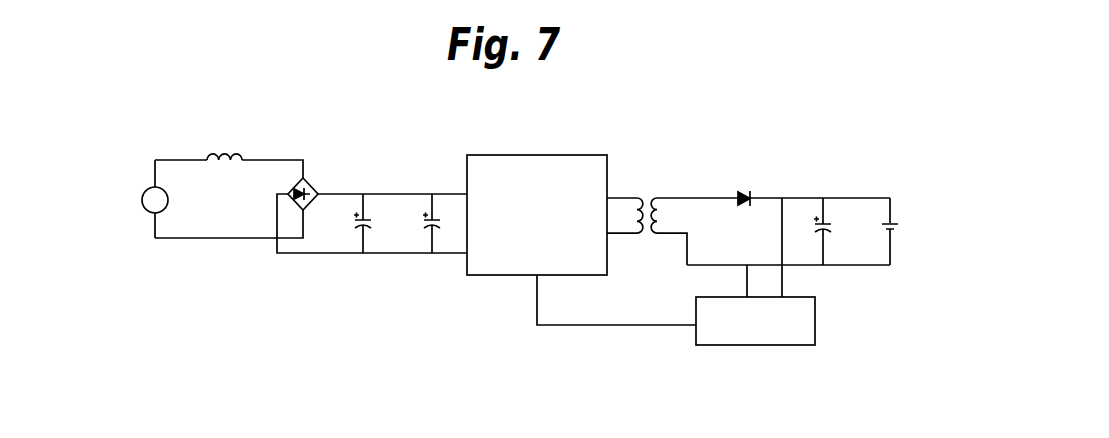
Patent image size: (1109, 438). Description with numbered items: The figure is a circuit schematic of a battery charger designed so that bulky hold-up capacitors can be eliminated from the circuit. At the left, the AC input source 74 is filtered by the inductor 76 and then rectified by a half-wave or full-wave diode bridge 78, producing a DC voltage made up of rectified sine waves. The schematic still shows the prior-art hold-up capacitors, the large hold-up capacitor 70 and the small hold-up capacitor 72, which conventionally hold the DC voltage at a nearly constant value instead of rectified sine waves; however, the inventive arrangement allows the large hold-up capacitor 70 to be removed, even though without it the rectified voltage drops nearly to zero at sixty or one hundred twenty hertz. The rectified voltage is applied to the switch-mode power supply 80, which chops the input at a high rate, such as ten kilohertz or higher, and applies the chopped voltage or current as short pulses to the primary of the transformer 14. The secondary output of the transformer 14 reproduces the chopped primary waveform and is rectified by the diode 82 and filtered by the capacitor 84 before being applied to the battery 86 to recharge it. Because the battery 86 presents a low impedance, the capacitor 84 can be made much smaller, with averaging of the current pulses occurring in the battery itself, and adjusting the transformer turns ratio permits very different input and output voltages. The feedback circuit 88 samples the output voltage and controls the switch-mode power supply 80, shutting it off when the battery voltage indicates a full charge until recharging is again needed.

The AC input source 74 is at (142, 191).
The inductor L1 76 is at (237, 153).
The diode bridge 78 is at (310, 182).
The hold-up capacitor C1 70 is at (352, 212).
The hold-up capacitor C2 72 is at (412, 210).
The switch-mode power supply 80 is at (540, 163).
The transformer 14 is at (650, 176).
The diode 82 is at (743, 174).
The capacitor C3 84 is at (807, 215).
The battery 86 is at (898, 222).
The feedback circuit 88 is at (783, 342).